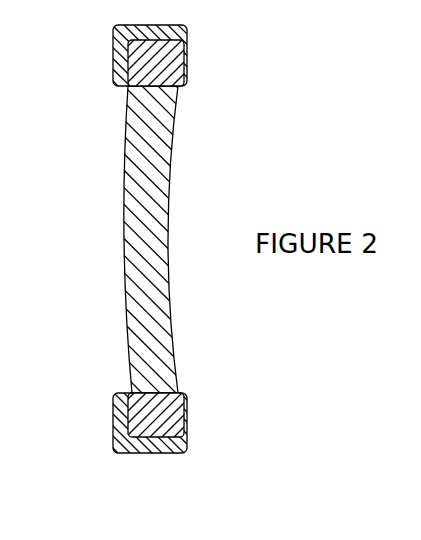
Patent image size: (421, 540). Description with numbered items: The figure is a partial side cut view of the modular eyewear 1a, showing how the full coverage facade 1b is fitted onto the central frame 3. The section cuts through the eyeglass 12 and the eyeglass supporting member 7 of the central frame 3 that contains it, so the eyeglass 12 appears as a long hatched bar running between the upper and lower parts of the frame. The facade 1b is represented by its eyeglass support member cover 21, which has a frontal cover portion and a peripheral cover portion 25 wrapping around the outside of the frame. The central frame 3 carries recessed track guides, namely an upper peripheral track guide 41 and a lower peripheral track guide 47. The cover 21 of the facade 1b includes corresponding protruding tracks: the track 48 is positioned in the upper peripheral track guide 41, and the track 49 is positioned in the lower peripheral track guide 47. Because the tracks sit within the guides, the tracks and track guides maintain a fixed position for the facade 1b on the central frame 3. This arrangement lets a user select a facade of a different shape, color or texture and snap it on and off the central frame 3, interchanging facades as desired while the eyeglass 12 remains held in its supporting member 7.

The eyewear 1a is at (210, 239).
The full coverage facade 1b is at (151, 76).
The central frame 3 is at (193, 83).
The eyeglass supporting member 7 is at (187, 395).
The eyeglass 12 is at (124, 230).
The eyeglass support member cover 21 is at (161, 426).
The peripheral cover portion 25 is at (150, 453).
The upper peripheral track guide 41 is at (184, 70).
The lower peripheral track guide 47 is at (187, 406).
The track 48 is at (116, 47).
The track 49 is at (124, 430).